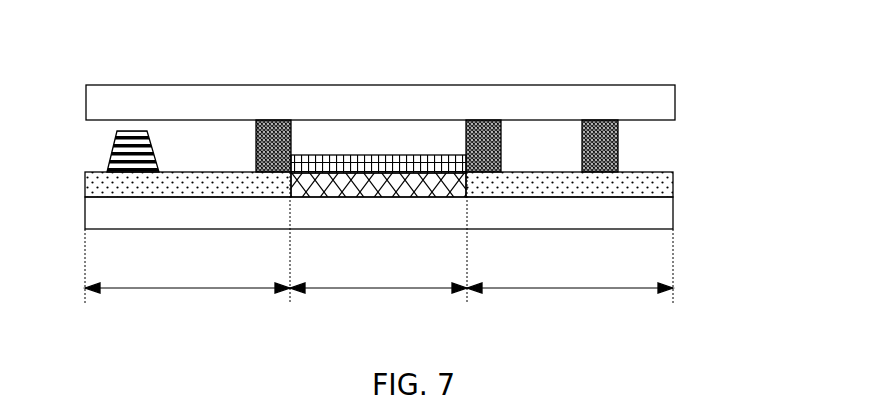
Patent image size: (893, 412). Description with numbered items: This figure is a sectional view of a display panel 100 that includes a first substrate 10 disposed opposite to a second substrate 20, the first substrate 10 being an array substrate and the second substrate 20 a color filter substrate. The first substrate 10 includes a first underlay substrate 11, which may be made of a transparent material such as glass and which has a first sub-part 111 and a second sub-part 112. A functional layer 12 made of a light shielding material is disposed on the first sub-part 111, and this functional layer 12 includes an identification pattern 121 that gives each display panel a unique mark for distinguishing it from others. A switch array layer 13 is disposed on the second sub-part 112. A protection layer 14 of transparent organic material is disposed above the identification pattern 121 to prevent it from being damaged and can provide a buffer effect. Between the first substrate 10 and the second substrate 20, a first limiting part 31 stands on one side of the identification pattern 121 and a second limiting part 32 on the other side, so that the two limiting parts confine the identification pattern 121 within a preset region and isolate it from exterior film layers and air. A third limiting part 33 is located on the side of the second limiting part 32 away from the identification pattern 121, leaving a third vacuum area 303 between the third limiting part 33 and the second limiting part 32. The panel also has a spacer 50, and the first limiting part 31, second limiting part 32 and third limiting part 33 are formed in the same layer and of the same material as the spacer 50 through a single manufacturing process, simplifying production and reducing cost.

The display panel 100 is at (147, 21).
The first substrate 10 is at (430, 186).
The first underlay substrate 11 is at (668, 222).
The switch array layer 13 is at (660, 185).
The functional layer 12 is at (313, 172).
The protection layer 14 is at (350, 155).
The identification pattern 121 is at (393, 168).
The second substrate 20 is at (672, 102).
The first limiting part 31 is at (270, 120).
The second limiting part 32 is at (484, 120).
The third limiting part 33 is at (597, 121).
The third vacuum area 303 is at (546, 147).
The spacer 50 is at (108, 150).
The first sub-part 111 is at (378, 303).
The second sub-part 112 is at (379, 303).